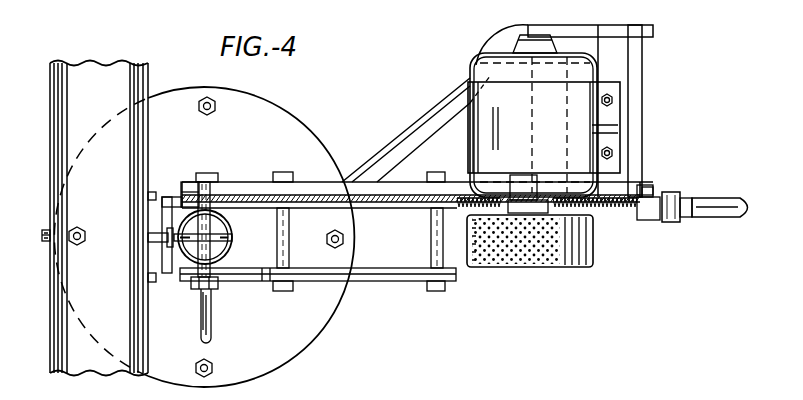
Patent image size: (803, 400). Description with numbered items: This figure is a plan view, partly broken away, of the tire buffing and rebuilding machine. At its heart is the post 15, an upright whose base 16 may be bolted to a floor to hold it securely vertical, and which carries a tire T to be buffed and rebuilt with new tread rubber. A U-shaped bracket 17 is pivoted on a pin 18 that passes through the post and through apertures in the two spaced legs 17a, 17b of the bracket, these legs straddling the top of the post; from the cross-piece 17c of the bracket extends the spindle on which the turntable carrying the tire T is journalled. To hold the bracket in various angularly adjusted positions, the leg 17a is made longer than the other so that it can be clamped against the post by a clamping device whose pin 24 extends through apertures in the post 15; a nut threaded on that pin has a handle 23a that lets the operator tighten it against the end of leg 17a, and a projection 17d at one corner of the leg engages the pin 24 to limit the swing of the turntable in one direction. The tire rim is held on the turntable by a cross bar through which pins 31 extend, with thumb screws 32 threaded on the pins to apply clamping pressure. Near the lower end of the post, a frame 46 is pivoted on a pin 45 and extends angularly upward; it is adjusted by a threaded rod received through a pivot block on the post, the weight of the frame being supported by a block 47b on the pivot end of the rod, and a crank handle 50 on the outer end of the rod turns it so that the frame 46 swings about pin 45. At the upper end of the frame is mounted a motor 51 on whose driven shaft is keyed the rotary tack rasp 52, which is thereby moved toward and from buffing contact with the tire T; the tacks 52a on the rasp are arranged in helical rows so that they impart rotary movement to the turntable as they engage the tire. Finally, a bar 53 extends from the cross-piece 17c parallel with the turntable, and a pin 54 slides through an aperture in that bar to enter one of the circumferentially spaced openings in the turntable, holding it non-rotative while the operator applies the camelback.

The tire T is at (117, 61).
The post 15 is at (229, 224).
The base 16 is at (296, 117).
The U-shaped bracket 17 is at (166, 190).
The leg 17a is at (252, 280).
The leg 17b is at (228, 206).
The cross-piece 17c is at (164, 257).
The projection 17d is at (264, 281).
The pin 18 is at (203, 289).
The handle 23a is at (212, 327).
The pin 24 is at (206, 308).
The pins 31 is at (44, 231).
The thumb screws 32 is at (43, 241).
The pin 45 is at (204, 173).
The frame 46 is at (372, 271).
The block 47b is at (186, 182).
The crank handle 50 is at (718, 208).
The motor 51 is at (467, 80).
The rasp 52 is at (594, 250).
The tacks 52a is at (535, 258).
The bar 53 is at (166, 232).
The pin 54 is at (223, 251).